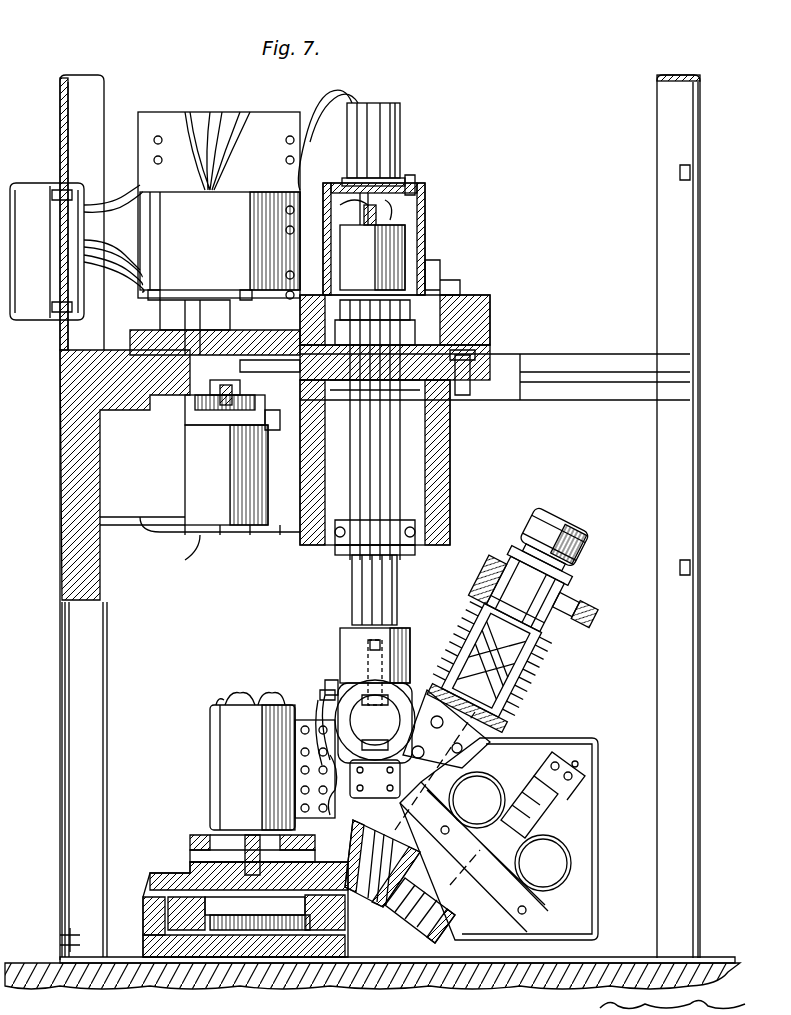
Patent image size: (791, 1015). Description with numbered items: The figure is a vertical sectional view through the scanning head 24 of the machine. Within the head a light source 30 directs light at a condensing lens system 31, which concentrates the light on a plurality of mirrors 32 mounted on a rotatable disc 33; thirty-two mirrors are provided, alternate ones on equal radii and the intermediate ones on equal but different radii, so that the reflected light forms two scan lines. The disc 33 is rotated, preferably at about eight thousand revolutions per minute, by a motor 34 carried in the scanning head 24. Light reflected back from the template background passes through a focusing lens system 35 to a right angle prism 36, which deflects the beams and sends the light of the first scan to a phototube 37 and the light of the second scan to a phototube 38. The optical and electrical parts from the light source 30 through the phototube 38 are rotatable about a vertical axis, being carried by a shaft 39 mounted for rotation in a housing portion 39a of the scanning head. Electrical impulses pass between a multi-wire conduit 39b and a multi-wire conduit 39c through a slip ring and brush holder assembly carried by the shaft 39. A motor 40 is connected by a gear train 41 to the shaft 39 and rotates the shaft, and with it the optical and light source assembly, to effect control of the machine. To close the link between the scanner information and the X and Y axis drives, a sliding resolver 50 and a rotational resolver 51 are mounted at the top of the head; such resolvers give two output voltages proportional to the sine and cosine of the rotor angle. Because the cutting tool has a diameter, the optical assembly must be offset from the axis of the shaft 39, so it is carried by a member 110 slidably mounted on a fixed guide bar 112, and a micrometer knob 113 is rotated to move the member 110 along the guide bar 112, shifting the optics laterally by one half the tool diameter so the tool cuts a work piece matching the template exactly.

The scanning head 24 is at (568, 192).
The light source 30 is at (497, 578).
The condensing lens system 31 is at (400, 865).
The mirrors 32 is at (145, 885).
The rotatable disc 33 is at (180, 880).
The motor 34 is at (218, 784).
The focusing lens system 35 is at (455, 905).
The right angle prism 36 is at (552, 812).
The phototube 37 is at (505, 765).
The phototube 38 is at (570, 858).
The shaft 39 is at (343, 584).
The housing portion 39a is at (452, 468).
The multi-wire conduit 39b is at (318, 690).
The multi-wire conduit 39c is at (200, 545).
The motor 40 is at (205, 215).
The gear train 41 is at (292, 374).
The sliding resolver 50 is at (415, 110).
The rotational resolver 51 is at (428, 245).
The member 110 is at (313, 653).
The guide bar 112 is at (378, 632).
The micrometer knob 113 is at (410, 668).